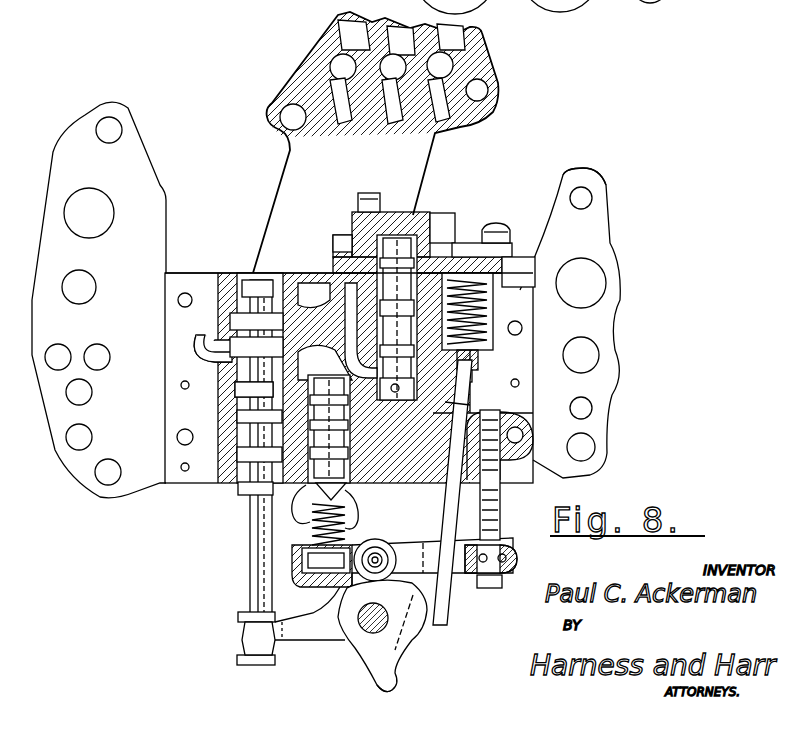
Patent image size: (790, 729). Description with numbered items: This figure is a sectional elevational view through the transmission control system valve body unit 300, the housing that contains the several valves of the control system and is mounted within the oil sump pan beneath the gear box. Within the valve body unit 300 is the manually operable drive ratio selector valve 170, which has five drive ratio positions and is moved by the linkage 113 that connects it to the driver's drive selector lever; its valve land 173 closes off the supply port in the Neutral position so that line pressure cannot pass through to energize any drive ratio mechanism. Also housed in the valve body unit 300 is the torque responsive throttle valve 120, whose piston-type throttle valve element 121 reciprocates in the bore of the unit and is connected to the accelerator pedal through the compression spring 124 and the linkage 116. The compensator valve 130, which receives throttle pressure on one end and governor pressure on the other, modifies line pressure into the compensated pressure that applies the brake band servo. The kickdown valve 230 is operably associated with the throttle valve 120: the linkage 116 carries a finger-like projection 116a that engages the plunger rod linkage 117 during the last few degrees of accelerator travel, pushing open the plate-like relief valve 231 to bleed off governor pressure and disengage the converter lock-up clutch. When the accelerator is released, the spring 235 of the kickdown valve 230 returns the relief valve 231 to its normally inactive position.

The valve body unit 300 is at (238, 268).
The compensator valve 130 is at (372, 298).
The kickdown valve 230 is at (530, 270).
The spring 235 is at (490, 300).
The plate-like relief valve 231 is at (470, 362).
The valve land 173 is at (268, 387).
The manually operable drive ratio selector valve 170 is at (232, 488).
The torque responsive throttle valve 120 is at (308, 487).
The throttle valve element 121 is at (347, 522).
The compression spring 124 is at (347, 534).
The plunger rod linkage 117 is at (448, 610).
The linkage 113 is at (310, 633).
The linkage 116 is at (366, 652).
The finger-like projection 116a is at (392, 682).